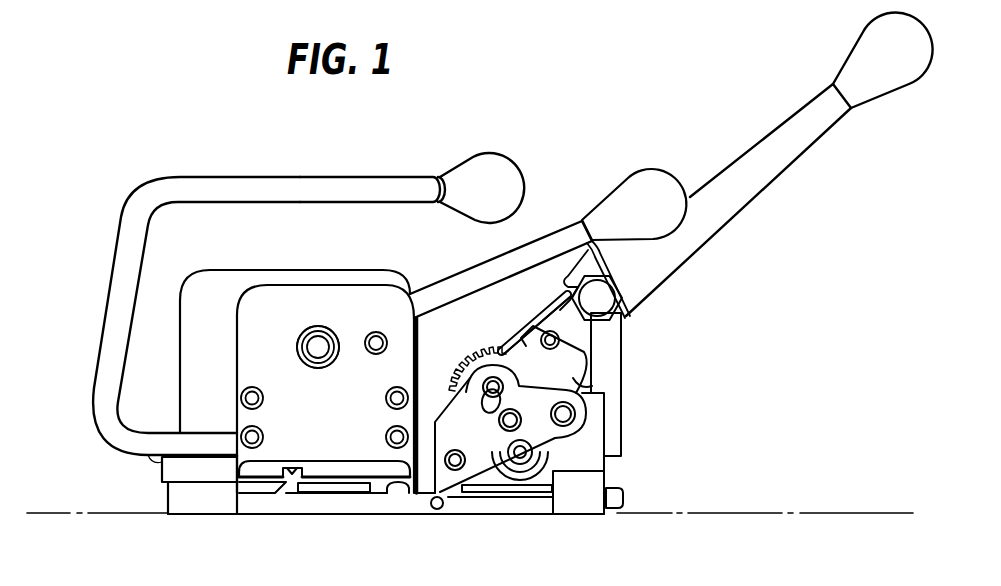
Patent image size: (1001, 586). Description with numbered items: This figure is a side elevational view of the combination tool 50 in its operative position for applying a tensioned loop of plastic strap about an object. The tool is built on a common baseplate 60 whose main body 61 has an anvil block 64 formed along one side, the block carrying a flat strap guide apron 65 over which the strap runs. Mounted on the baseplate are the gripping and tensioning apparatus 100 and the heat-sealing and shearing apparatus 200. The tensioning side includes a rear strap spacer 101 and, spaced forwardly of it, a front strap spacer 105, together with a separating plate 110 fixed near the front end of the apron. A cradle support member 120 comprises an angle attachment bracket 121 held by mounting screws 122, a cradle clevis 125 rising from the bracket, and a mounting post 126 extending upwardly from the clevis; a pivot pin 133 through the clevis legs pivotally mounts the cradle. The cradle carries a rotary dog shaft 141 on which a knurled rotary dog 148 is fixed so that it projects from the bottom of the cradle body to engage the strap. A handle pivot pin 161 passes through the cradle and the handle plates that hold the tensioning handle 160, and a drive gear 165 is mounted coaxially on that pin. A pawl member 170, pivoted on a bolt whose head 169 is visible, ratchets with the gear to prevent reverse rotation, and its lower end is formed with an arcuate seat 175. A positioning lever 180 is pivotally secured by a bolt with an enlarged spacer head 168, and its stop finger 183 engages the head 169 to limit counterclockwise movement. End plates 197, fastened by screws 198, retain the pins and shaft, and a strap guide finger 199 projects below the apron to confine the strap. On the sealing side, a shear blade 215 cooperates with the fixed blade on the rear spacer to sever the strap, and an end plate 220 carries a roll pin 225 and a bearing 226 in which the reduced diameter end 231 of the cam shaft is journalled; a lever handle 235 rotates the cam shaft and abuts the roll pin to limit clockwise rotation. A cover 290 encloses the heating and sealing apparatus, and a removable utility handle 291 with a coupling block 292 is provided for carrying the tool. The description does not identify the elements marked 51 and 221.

The combination tool 50 is at (438, 127).
The support surface / strap plane 51 is at (772, 510).
The baseplate 60 is at (180, 510).
The main body 61 is at (212, 500).
The anvil block 64 is at (303, 506).
The strap guide apron 65 is at (377, 494).
The gripping and tensioning apparatus 100 is at (665, 332).
The rear strap spacer 101 is at (260, 494).
The front strap spacer 105 is at (397, 494).
The separating plate 110 is at (476, 494).
The cradle support member 120 is at (612, 476).
The angle attachment bracket 121 is at (591, 507).
The mounting screws 122 is at (623, 502).
The cradle clevis 125 is at (593, 447).
The mounting post 126 is at (621, 395).
The pivot pin 133 is at (566, 415).
The rotary dog shaft 141 is at (512, 451).
The rotary dog 148 is at (545, 500).
The tensioning handle 160 is at (770, 147).
The handle pivot pin 161 is at (503, 380).
The drive gear 165 is at (477, 350).
The enlarged spacer head 168 is at (610, 300).
The bolt head 169 is at (549, 350).
The pawl member 170 is at (546, 303).
The arcuate seat 175 is at (582, 382).
The positioning lever 180 is at (576, 268).
The stop finger 183 is at (537, 323).
The end plates 197 is at (443, 427).
The screws 198 is at (499, 421).
The strap guide finger 199 is at (438, 513).
The heat-sealing and shearing apparatus 200 is at (262, 254).
The shear blade 215 is at (293, 470).
The end plate 220 is at (362, 297).
The fastening screws 221 is at (384, 398).
The roll pin 225 is at (374, 333).
The bearing 226 is at (313, 327).
The reduced diameter end 231 is at (316, 346).
The lever handle 235 is at (507, 263).
The cover 290 is at (195, 293).
The utility handle 291 is at (308, 190).
The coupling block 292 is at (183, 467).